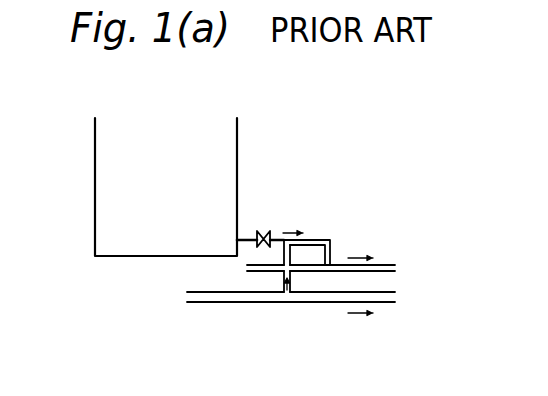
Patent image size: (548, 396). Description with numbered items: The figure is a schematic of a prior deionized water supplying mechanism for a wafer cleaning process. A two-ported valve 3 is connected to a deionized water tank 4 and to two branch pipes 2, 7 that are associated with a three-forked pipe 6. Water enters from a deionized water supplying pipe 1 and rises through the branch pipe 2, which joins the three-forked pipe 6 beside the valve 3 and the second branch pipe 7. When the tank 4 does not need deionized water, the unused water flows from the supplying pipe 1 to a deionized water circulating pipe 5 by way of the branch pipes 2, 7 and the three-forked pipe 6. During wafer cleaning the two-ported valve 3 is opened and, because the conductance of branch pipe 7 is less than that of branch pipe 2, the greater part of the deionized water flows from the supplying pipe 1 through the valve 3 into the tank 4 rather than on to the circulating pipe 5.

The deionized water supplying pipe 1 is at (230, 303).
The branch pipe 2 is at (291, 282).
The two-ported valve 3 is at (258, 236).
The deionized water tank 4 is at (238, 143).
The deionized water circulating pipe 5 is at (394, 264).
The three-forked pipe 6 is at (283, 250).
The branch pipe 7 is at (327, 239).